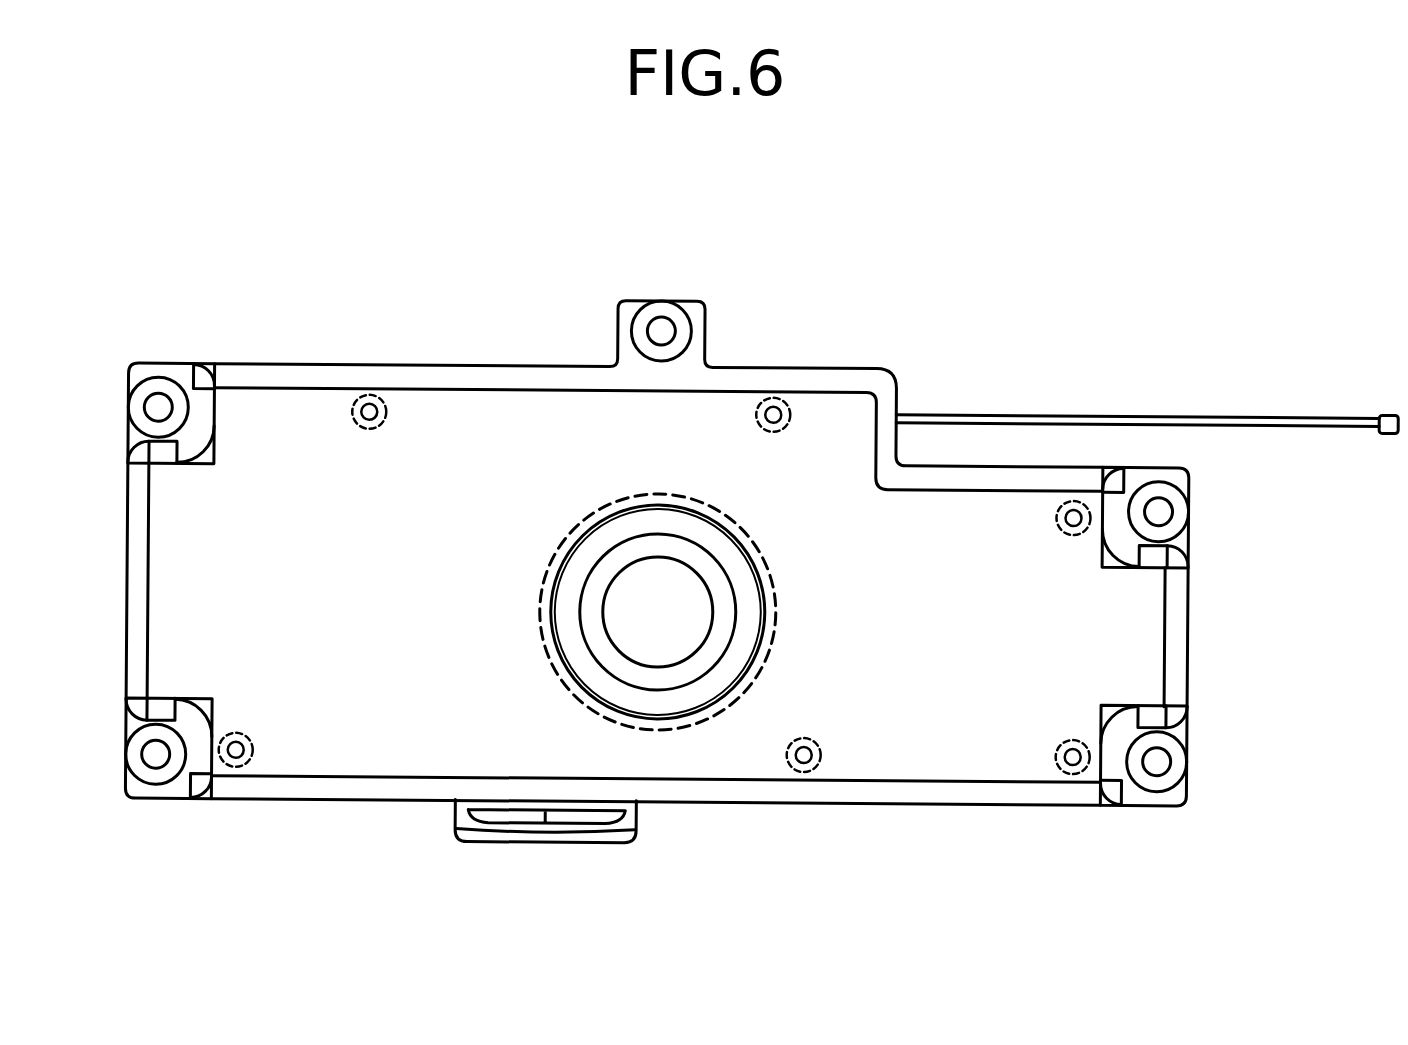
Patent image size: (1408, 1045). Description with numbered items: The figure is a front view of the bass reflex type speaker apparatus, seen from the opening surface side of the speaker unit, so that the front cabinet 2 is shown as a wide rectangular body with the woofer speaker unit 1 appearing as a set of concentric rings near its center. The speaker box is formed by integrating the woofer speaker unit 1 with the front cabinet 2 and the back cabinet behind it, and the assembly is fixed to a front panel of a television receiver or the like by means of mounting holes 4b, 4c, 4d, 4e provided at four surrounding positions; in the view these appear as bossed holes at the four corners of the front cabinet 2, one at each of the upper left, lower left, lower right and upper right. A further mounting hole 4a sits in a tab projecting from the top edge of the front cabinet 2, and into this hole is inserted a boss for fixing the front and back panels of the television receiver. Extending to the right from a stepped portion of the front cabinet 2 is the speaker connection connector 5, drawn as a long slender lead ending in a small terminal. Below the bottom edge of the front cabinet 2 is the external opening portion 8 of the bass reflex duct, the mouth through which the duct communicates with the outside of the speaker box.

The woofer speaker unit 1 is at (703, 613).
The front cabinet 2 is at (923, 740).
The mounting hole 4a is at (659, 327).
The mounting hole 4b is at (157, 407).
The mounting hole 4c is at (157, 754).
The mounting hole 4d is at (1158, 754).
The mounting hole 4e is at (1158, 504).
The speaker connection connector 5 is at (1178, 409).
The external opening portion 8 is at (528, 840).